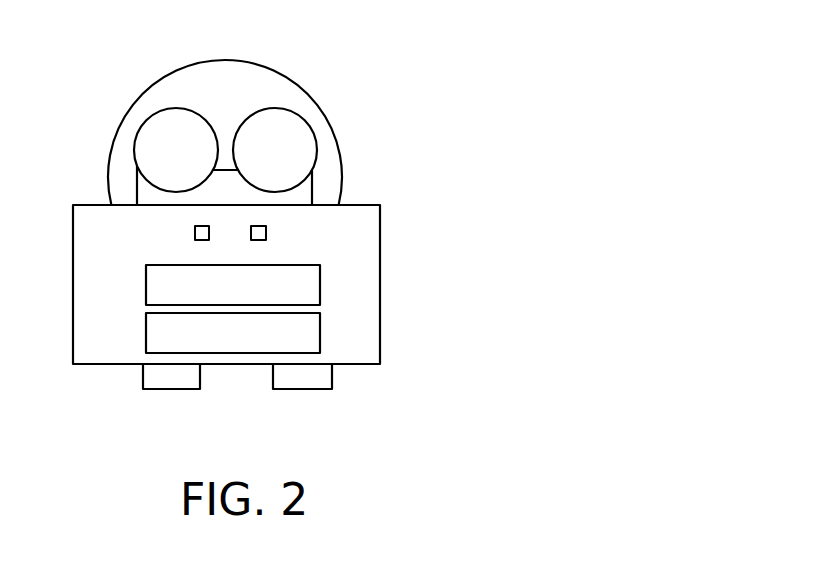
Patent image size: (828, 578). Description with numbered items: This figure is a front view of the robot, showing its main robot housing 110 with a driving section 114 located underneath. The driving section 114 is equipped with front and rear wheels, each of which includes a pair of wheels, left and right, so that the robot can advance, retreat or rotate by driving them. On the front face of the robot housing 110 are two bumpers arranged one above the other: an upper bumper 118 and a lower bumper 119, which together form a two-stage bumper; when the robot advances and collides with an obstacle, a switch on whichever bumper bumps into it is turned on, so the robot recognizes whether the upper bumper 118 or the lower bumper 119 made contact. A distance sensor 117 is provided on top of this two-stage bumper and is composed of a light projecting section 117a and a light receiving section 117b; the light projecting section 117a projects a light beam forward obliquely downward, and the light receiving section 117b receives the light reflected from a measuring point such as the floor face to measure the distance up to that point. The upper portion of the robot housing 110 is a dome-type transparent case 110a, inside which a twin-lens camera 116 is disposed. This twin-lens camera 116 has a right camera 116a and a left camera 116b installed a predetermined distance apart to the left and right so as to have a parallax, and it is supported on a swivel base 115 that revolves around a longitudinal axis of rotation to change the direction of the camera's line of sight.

The robot housing 110 is at (380, 270).
The dome-type transparent case 110a is at (263, 63).
The driving section 114 is at (349, 380).
The swivel base 115 is at (312, 182).
The twin-lens camera 116 is at (314, 122).
The right camera 116a is at (198, 112).
The left camera 116b is at (303, 115).
The distance sensor 117 is at (378, 221).
The light projecting section 117a is at (203, 225).
The light receiving section 117b is at (266, 232).
The upper bumper 118 is at (320, 288).
The lower bumper 119 is at (320, 327).